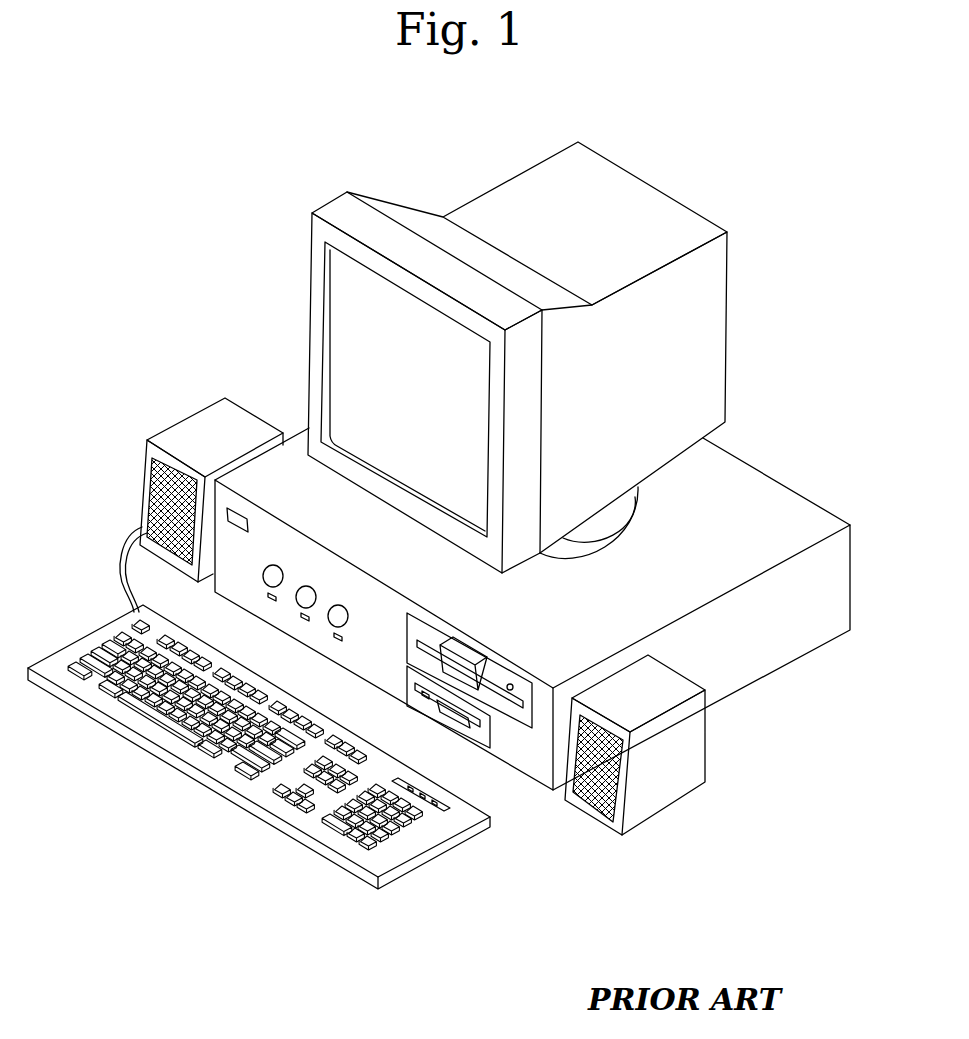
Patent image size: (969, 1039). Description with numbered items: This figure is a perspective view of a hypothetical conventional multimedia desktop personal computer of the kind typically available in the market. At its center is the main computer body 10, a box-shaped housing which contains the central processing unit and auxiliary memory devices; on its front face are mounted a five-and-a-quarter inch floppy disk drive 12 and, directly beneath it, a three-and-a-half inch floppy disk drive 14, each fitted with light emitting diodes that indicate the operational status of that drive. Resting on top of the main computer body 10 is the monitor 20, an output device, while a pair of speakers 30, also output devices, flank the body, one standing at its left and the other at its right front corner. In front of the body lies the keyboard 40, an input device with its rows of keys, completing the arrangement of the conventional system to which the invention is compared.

The main computer body 10 is at (295, 453).
The 5.25" floppy disk drive 12 is at (498, 678).
The 3.5" floppy disk drive 14 is at (480, 733).
The monitor 20 is at (692, 235).
The pair of speakers 30 is at (170, 437).
The keyboard 40 is at (393, 853).